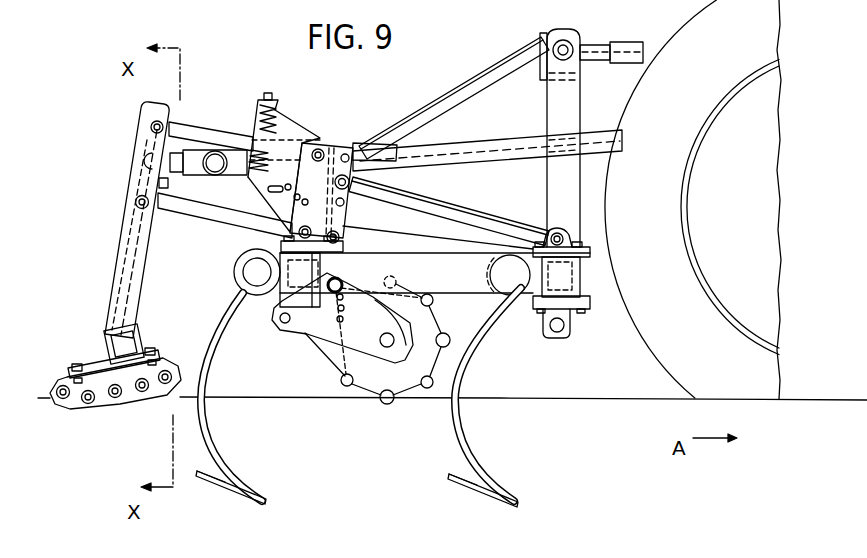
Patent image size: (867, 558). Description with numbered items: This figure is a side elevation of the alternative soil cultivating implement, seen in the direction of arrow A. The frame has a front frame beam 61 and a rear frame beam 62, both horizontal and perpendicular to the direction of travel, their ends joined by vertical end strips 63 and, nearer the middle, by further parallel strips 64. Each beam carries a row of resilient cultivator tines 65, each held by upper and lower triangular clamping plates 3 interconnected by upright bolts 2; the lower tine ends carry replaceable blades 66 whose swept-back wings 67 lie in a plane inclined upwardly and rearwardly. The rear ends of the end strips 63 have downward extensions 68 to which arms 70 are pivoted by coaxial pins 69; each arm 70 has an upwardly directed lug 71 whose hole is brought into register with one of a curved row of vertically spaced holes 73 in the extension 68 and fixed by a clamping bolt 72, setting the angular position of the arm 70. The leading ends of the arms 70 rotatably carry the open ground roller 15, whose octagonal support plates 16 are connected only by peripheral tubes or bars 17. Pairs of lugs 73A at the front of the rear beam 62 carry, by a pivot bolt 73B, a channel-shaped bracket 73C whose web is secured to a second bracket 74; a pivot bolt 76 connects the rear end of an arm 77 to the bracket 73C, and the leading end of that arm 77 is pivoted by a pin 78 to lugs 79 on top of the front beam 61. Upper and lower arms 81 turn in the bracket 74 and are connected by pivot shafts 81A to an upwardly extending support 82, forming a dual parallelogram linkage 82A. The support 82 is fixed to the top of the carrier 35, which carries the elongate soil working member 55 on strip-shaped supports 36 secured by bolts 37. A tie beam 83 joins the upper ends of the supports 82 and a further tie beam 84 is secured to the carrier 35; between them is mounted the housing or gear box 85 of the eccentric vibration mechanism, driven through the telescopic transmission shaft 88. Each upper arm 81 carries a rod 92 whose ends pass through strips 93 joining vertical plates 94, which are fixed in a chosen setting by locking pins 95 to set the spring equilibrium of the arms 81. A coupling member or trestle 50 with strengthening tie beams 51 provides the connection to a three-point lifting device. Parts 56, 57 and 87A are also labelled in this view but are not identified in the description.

The upright bolts 2 is at (573, 332).
The clamping plates 3 is at (583, 254).
The open ground roller 15 is at (365, 398).
The support plates 16 is at (402, 404).
The tubes or bars 17 is at (445, 345).
The carrier 35 is at (141, 335).
The strip-shaped supports 36 is at (158, 355).
The bolts 37 is at (77, 366).
The coupling member or trestle 50 is at (581, 97).
The strengthening tie beams 51 is at (480, 98).
The elongate soil working member 55 is at (80, 412).
The bolt 56 is at (110, 404).
The bolt 57 is at (145, 396).
The front frame beam 61 is at (575, 280).
The rear frame beam 62 is at (338, 266).
The end strips 63 is at (463, 296).
The further parallel strips 64 is at (414, 232).
The cultivator tines 65 is at (222, 457).
The replaceable blades 66 is at (255, 493).
The swept back wings 67 is at (215, 487).
The downward extensions 68 is at (305, 333).
The pivot pins 69 is at (280, 329).
The arms 70 is at (366, 355).
The lugs 71 is at (367, 312).
The clamping bolt 72 is at (383, 280).
The holes 73 is at (341, 344).
The lugs 73A is at (340, 250).
The pivot bolt 73B is at (349, 210).
The bracket 73C is at (354, 146).
The second bracket 74 is at (331, 142).
The pivot bolt 76 is at (291, 188).
The arms 77 is at (467, 211).
The pivot pins 78 is at (560, 232).
The lugs 79 is at (577, 240).
The upper and lower arms 81 is at (186, 129).
The pivot shafts 81A is at (152, 122).
The supports 82 is at (139, 291).
The dual parallelogram linkage 82A is at (238, 198).
The tie beam 83 is at (140, 160).
The tie beam 84 is at (136, 268).
The housing or gear box 85 is at (167, 184).
The link block 87A is at (183, 163).
The telescopic transmission shaft 88 is at (527, 138).
The rod 92 is at (276, 104).
The strips 93 is at (267, 93).
The plates 94 is at (298, 125).
The locking pins 95 is at (270, 189).